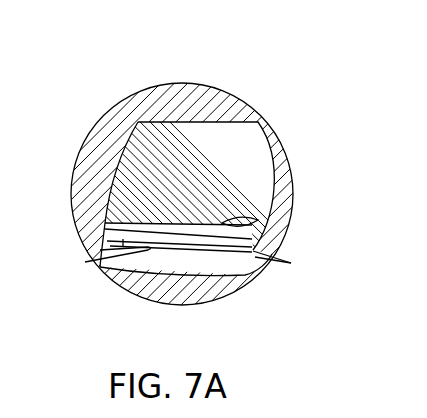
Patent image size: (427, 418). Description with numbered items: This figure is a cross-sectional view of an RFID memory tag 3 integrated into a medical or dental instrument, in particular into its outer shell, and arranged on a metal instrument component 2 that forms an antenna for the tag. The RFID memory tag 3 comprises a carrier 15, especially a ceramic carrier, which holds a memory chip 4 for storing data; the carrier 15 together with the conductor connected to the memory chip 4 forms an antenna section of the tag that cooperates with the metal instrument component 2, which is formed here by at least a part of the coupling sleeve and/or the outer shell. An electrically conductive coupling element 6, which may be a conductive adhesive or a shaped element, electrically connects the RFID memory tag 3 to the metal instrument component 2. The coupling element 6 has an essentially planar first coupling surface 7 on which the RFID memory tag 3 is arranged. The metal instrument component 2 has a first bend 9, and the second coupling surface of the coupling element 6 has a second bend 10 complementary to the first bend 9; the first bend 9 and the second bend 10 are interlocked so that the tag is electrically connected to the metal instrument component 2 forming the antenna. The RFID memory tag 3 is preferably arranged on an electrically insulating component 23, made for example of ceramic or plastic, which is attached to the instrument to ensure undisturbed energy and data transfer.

The metal instrument component 2 is at (258, 291).
The RFID memory tag 3 is at (290, 124).
The memory chip 4 is at (258, 169).
The carrier 15 is at (188, 192).
The electrically conductive coupling element 6 is at (291, 263).
The first coupling surface 7 is at (226, 222).
The first bend 9 is at (107, 228).
The second bend 10 is at (85, 262).
The electrically insulating component 23 is at (173, 63).